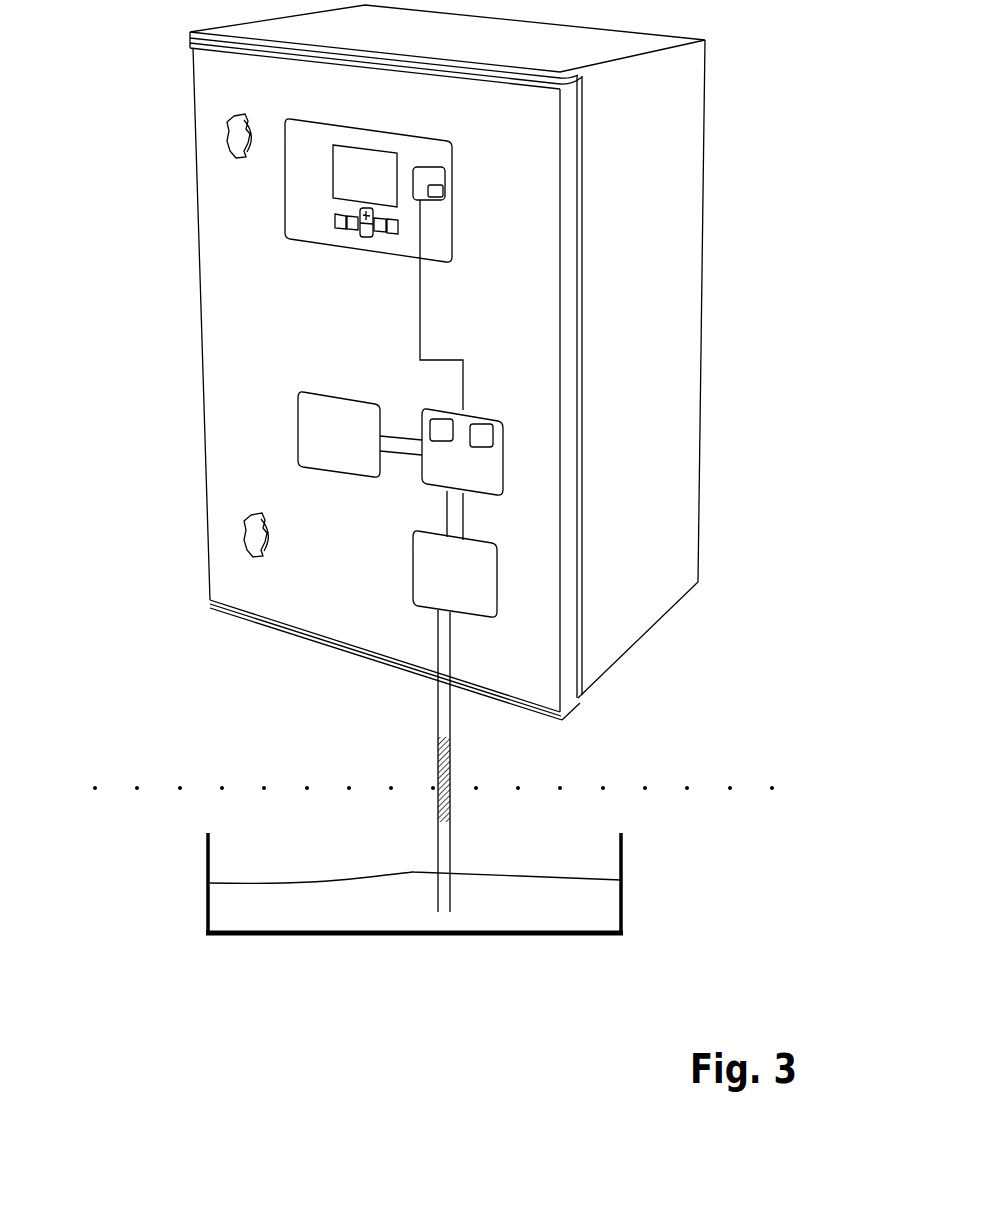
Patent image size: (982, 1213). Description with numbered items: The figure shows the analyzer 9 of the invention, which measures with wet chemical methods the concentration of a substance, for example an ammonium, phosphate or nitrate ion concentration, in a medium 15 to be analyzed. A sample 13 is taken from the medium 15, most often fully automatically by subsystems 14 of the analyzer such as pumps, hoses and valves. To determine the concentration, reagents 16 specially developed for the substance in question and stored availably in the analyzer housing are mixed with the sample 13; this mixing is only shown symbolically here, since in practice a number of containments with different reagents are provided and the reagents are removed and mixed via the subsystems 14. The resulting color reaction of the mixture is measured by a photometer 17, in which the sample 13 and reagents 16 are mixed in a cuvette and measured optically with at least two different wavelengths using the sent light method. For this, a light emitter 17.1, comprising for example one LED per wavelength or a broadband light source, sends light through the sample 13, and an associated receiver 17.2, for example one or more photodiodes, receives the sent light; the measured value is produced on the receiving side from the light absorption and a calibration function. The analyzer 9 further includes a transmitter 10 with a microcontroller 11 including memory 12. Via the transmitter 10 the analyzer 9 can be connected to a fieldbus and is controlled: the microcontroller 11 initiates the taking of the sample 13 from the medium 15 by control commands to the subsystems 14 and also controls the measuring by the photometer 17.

The analyzer 9 is at (217, 95).
The transmitter 10 is at (302, 208).
The microcontroller 11 is at (445, 176).
The memory 12 is at (443, 193).
The sample 13 is at (452, 755).
The subsystems 14 is at (475, 583).
The medium 15 is at (600, 912).
The reagents 16 is at (340, 436).
The photometer 17 is at (480, 478).
The light emitter 17.1 is at (438, 428).
The receiver 17.2 is at (483, 438).